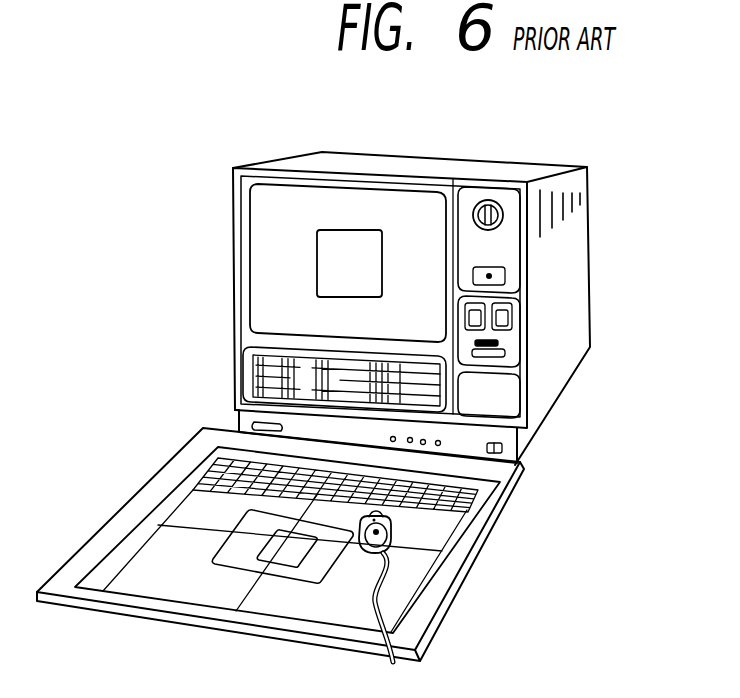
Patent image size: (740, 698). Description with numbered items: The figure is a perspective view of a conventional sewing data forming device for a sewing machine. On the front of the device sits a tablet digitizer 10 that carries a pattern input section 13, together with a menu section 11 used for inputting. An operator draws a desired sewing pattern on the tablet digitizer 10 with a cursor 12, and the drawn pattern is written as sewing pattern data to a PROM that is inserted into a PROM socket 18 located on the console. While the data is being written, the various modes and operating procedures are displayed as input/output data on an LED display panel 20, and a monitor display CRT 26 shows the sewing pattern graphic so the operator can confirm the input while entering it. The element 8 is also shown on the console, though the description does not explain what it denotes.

The monitor display CRT 26 is at (313, 197).
The power switch panel 8 is at (503, 195).
The PROM socket 18 is at (523, 308).
The LED display panel 20 is at (460, 397).
The tablet digitizer 10 is at (127, 502).
The menu section 11 is at (470, 507).
The cursor 12 is at (393, 540).
The pattern input section 13 is at (205, 583).